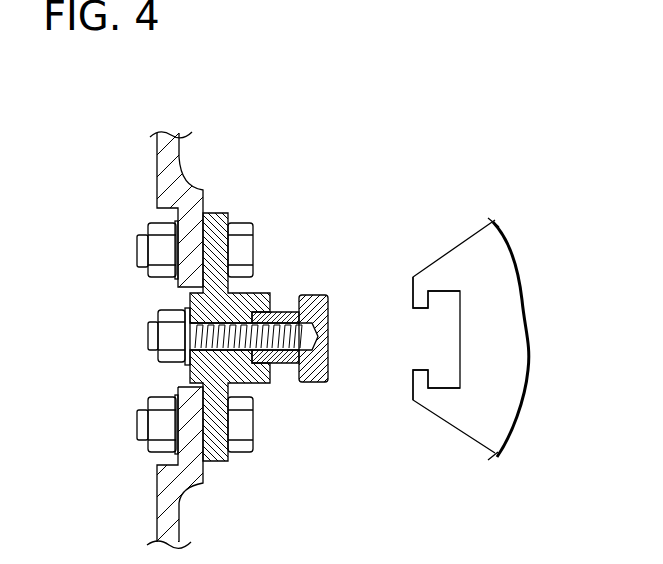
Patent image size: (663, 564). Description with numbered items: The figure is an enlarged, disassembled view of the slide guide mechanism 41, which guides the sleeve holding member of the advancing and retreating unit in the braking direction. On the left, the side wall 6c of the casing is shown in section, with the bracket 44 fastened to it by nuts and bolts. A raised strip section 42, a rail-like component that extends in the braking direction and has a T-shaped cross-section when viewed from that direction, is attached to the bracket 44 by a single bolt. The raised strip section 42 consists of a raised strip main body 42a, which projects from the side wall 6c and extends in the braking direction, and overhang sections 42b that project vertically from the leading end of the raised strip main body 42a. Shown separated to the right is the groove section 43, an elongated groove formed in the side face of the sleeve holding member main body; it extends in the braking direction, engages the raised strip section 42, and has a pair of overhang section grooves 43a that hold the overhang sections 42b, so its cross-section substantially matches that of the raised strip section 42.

The side wall 6c is at (185, 198).
The slide guide mechanism 41 is at (487, 125).
The raised strip section 42 is at (293, 388).
The raised strip main body 42a is at (285, 311).
The overhang sections 42b is at (313, 298).
The groove section 43 is at (462, 258).
The overhang section grooves 43a is at (443, 298).
The bracket 44 is at (197, 302).